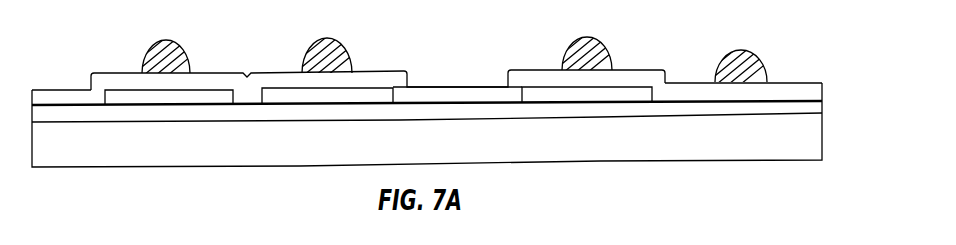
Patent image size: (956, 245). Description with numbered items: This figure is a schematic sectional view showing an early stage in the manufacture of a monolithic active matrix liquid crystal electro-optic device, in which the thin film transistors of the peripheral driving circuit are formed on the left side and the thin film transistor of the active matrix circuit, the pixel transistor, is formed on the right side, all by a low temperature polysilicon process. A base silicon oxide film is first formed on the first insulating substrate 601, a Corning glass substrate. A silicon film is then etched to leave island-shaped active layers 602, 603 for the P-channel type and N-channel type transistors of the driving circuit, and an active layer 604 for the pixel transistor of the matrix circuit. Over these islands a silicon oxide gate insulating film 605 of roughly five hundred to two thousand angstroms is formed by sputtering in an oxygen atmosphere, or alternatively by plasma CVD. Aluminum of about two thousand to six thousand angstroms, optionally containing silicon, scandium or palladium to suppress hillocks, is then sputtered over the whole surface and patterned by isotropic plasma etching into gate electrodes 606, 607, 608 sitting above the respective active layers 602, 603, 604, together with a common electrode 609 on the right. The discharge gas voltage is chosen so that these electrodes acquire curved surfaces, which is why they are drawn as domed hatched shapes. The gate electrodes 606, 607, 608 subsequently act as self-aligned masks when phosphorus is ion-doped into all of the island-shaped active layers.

The first insulating substrate 601 is at (445, 152).
The island-shaped active layer 602 is at (138, 97).
The island-shaped active layer 603 is at (300, 97).
The active layer 604 is at (553, 93).
The gate insulating film 605 is at (457, 85).
The gate electrode 606 is at (167, 40).
The gate electrode 607 is at (325, 38).
The gate electrode 608 is at (585, 37).
The common electrode 609 is at (738, 50).